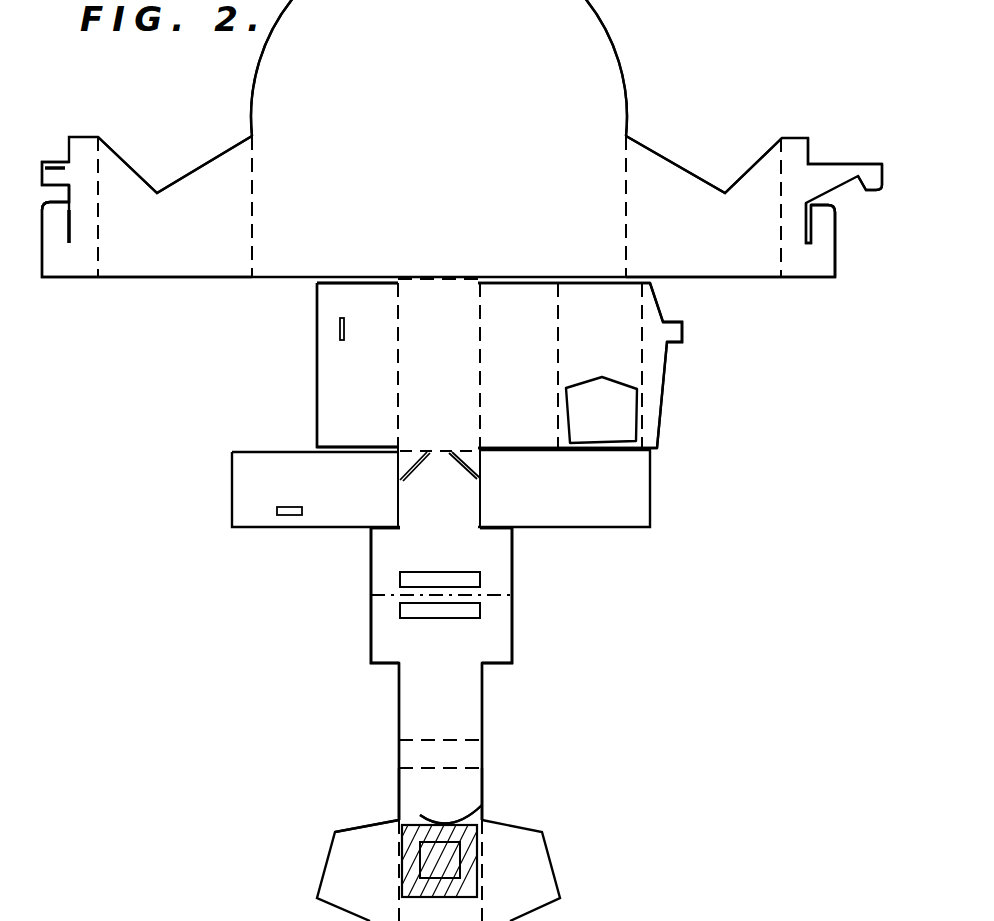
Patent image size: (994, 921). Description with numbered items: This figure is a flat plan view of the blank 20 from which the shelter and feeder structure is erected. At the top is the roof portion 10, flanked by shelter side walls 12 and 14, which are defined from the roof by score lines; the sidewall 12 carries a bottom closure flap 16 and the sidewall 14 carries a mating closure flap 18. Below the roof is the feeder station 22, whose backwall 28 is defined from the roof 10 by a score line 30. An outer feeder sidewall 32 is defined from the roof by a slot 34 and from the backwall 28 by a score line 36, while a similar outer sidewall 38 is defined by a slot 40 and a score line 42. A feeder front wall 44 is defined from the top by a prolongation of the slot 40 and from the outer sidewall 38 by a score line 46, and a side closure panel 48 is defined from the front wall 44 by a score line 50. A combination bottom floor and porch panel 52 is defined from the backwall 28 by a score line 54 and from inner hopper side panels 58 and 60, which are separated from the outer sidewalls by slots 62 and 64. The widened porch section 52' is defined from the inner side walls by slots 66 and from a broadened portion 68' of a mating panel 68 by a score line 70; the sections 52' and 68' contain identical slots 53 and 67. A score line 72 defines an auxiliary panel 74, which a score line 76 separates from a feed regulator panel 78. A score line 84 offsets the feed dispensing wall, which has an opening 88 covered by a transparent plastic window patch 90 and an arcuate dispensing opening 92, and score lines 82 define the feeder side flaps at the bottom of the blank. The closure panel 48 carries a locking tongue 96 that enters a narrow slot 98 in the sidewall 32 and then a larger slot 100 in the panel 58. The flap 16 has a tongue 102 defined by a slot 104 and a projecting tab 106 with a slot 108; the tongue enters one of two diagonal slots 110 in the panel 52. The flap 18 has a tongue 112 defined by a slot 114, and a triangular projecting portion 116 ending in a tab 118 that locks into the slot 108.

The roof portion 10 is at (387, 133).
The shelter side wall 12 is at (184, 246).
The shelter side wall 14 is at (717, 241).
The bottom closure flap 16 is at (80, 270).
The mating closure flap 18 is at (806, 275).
The blank 20 is at (536, 592).
The feeder station 22 is at (300, 387).
The backwall 28 is at (445, 371).
The score line 30 is at (445, 278).
The outer feeder sidewall 32 is at (365, 391).
The slot 34 is at (345, 279).
The score line 36 is at (401, 319).
The outer sidewall 38 is at (524, 373).
The slot 40 is at (543, 280).
The score line 42 is at (480, 402).
The feeder front wall 44 is at (612, 338).
The score line 46 is at (560, 373).
The side closure panel 48 is at (652, 314).
The score line 50 is at (643, 410).
The combination bottom floor and porch panel 52 is at (439, 489).
The porch or perch forming section 52' is at (441, 595).
The slot 53 is at (482, 580).
The score line 54 is at (440, 450).
The inner feeder side panel 58 is at (355, 496).
The inner hopper side panel 60 is at (590, 496).
The slot 62 is at (370, 447).
The slot 64 is at (528, 448).
The slots 66 is at (388, 530).
The slot 67 is at (482, 610).
The mating panel 68 is at (440, 741).
The broadened portion 68' is at (441, 595).
The score line 70 is at (385, 595).
The score line 72 is at (460, 740).
The auxiliary panel 74 is at (458, 755).
The score line 76 is at (423, 768).
The feed regulator panel 78 is at (450, 803).
The score lines 82 is at (477, 898).
The score line 84 is at (415, 815).
The opening 88 is at (460, 852).
The transparent plastic window patch 90 is at (410, 830).
The arcuate dispensing opening 92 is at (467, 813).
The locking tongue 96 is at (682, 329).
The narrow slot 98 is at (339, 329).
The slot 100 is at (287, 516).
The tongue 102 is at (58, 215).
The slot 104 is at (70, 238).
The projecting tab 106 is at (52, 160).
The slot 108 is at (65, 168).
The diagonal slots 110 is at (422, 468).
The tongue 112 is at (823, 225).
The slot 114 is at (806, 222).
The triangular projecting portion 116 is at (820, 168).
The tab 118 is at (883, 187).